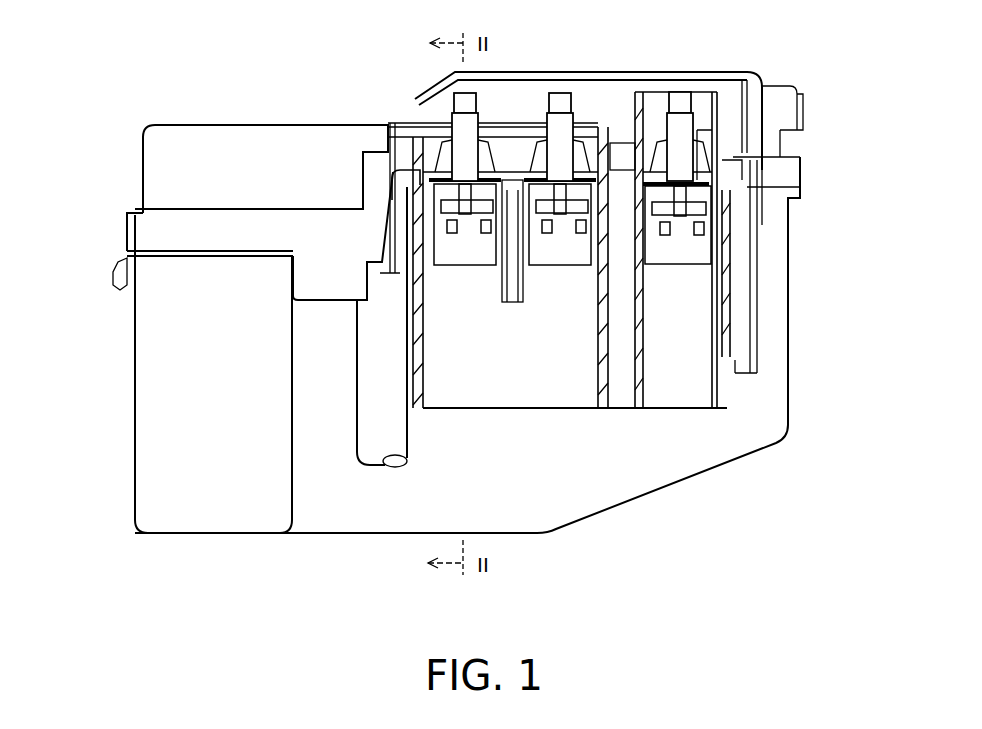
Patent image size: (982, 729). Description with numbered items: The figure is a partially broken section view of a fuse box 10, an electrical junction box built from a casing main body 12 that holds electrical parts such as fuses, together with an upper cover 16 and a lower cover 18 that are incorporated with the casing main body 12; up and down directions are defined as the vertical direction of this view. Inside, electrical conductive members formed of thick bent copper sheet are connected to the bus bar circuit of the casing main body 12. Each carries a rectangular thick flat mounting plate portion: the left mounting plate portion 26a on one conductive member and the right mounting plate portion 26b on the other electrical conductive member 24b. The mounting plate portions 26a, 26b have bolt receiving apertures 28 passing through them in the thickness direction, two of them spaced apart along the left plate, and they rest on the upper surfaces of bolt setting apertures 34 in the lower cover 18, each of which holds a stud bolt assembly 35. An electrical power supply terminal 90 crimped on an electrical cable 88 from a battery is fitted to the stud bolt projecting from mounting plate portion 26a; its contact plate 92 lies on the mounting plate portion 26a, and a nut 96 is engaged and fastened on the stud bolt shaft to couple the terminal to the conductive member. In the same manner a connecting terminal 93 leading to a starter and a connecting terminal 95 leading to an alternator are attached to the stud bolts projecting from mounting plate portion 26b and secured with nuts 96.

The fuse box 10 is at (811, 78).
The casing main body 12 is at (760, 225).
The upper cover 16 is at (157, 158).
The lower cover 18 is at (163, 363).
The electrical conductive member 24b is at (730, 302).
The mounting plate portion 26a is at (517, 178).
The mounting plate portion 26b is at (713, 157).
The bolt receiving aperture 28 is at (467, 245).
The bolt setting aperture 34 is at (428, 272).
The stud bolt assembly 35 is at (448, 76).
The electrical cable 88 is at (367, 440).
The electrical power supply terminal 90 is at (399, 156).
The contact plate 92 is at (413, 142).
The connecting terminal 93 is at (622, 135).
The connecting terminal 95 is at (708, 135).
The nut 96 is at (445, 108).